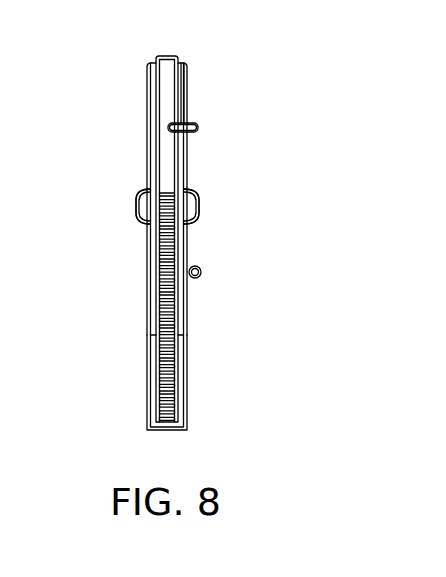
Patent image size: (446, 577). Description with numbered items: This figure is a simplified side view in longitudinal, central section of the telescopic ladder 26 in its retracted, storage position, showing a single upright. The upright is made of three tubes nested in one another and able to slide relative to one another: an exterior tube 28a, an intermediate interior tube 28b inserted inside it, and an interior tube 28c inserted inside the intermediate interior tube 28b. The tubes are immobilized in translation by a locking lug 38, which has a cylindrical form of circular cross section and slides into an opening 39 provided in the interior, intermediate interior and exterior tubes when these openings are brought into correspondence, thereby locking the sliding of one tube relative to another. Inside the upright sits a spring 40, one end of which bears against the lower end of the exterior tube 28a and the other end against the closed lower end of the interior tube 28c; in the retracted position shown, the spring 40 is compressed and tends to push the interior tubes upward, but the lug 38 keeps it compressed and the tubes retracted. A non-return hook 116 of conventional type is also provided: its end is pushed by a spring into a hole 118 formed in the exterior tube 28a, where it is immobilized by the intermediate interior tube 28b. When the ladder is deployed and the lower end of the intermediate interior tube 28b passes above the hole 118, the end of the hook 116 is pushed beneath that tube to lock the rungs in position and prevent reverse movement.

The ladder 26 is at (186, 188).
The exterior tube 28a is at (147, 373).
The intermediate interior tube 28b is at (147, 243).
The interior tube 28c is at (147, 97).
The lug 38 is at (185, 120).
The opening 39 is at (198, 128).
The spring 40 is at (177, 243).
The non-return hook 116 is at (199, 207).
The hole 118 is at (137, 220).